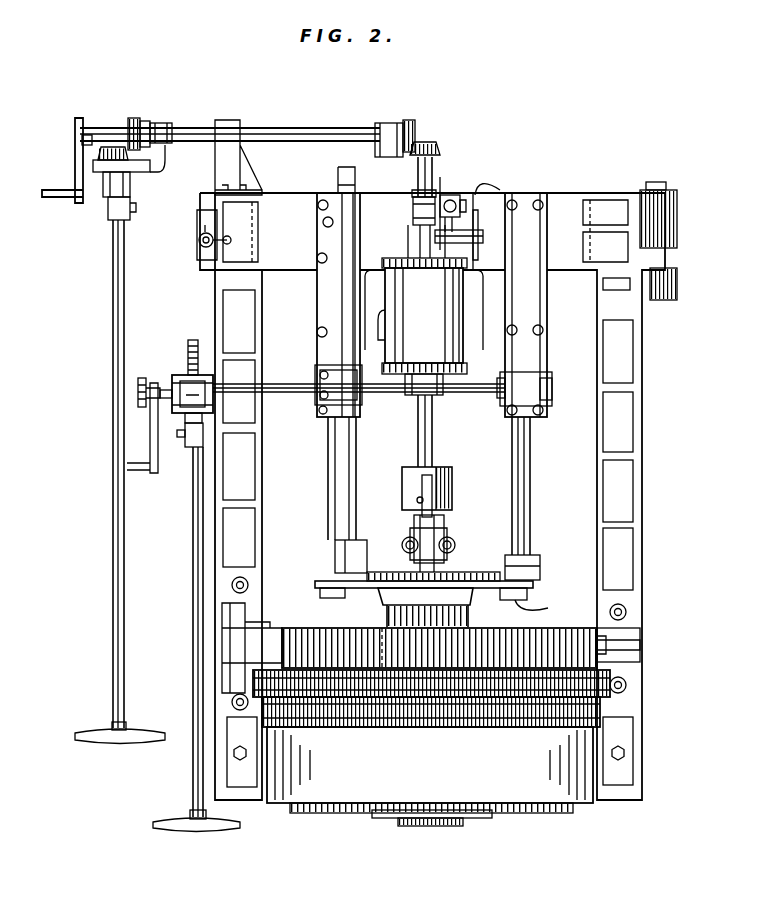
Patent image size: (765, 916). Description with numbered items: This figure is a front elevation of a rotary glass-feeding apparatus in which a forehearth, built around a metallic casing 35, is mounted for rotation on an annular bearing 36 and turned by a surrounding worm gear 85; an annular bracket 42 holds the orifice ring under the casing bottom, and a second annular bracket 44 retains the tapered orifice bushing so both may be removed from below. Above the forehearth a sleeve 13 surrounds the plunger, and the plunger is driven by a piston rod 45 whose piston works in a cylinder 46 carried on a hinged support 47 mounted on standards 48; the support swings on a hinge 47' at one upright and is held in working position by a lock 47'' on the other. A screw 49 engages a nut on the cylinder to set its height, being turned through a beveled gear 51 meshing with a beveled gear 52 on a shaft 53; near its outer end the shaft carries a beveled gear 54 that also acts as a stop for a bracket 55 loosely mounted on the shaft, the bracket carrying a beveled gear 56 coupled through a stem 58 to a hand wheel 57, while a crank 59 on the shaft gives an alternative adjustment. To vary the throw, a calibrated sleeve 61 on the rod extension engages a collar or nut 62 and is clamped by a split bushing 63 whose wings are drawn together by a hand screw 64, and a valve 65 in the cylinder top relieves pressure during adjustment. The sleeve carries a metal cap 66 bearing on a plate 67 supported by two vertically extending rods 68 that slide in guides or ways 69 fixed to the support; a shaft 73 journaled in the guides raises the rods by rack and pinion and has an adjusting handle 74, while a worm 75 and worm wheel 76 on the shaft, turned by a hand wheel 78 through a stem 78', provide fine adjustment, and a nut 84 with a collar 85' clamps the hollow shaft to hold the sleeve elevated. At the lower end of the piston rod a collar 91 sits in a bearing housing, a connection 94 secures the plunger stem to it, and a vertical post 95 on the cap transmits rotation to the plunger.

The sleeve 13 is at (400, 615).
The metallic casing 35 is at (338, 813).
The annular bearing 36 is at (303, 773).
The annular bracket 42 is at (387, 818).
The annular bracket 44 is at (427, 826).
The piston rod 45 is at (435, 440).
The cylinder 46 is at (455, 355).
The hinged support 47 is at (550, 217).
The hinge 47' is at (679, 241).
The lock 47'' is at (189, 235).
The standards 48 is at (643, 514).
The screw 49 is at (440, 177).
The beveled gear 51 is at (424, 155).
The beveled gear 52 is at (413, 125).
The shaft 53 is at (335, 127).
The beveled gear 54 is at (140, 118).
The bracket 55 is at (167, 123).
The beveled gear 56 is at (102, 128).
The hand wheel 57 is at (90, 728).
The stem 58 is at (113, 487).
The crank 59 is at (75, 159).
The calibrated sleeve 61 is at (478, 190).
The collar or nut 62 is at (413, 195).
The split sleeve or bushing 63 is at (413, 238).
The hand screw 64 is at (483, 203).
The valve 65 is at (457, 197).
The metal cap 66 is at (478, 572).
The plate 67 is at (500, 592).
The vertically extending rods 68 is at (523, 487).
The guides or ways 69 is at (520, 352).
The shaft 73 is at (290, 398).
The adjusting handle 74 is at (147, 425).
The worm 75 is at (182, 373).
The worm wheel 76 is at (193, 342).
The hand wheel 78 is at (191, 835).
The stem 78' is at (175, 632).
The nut 84 is at (140, 378).
The worm gear 85 is at (639, 672).
The collar 85' is at (562, 387).
The collar 91 is at (407, 478).
The connection 94 is at (408, 540).
The vertical post 95 is at (432, 487).